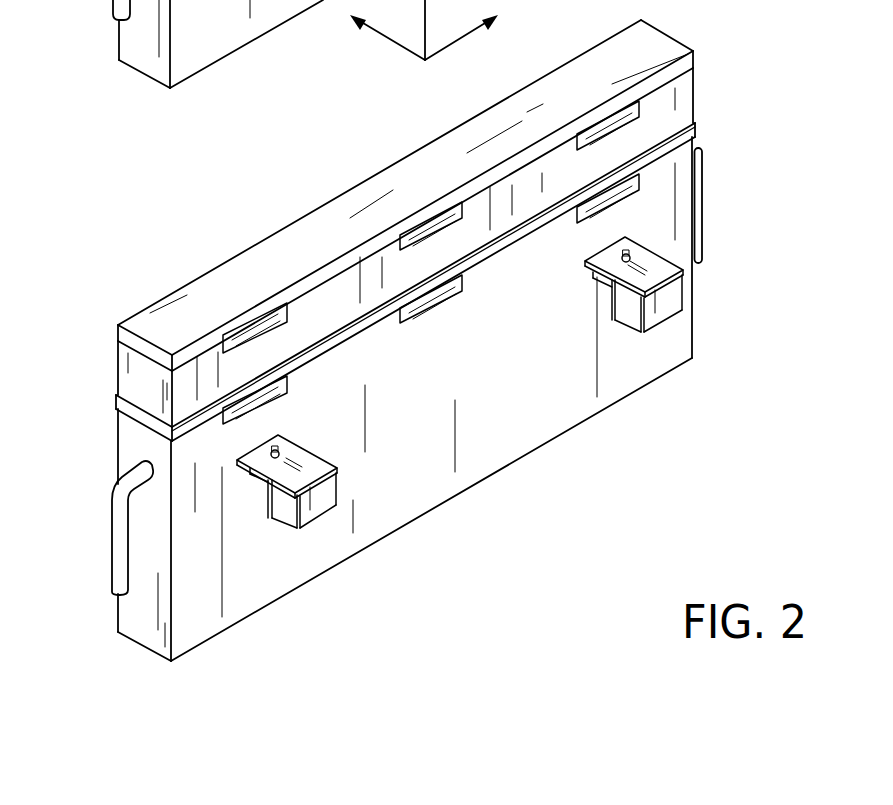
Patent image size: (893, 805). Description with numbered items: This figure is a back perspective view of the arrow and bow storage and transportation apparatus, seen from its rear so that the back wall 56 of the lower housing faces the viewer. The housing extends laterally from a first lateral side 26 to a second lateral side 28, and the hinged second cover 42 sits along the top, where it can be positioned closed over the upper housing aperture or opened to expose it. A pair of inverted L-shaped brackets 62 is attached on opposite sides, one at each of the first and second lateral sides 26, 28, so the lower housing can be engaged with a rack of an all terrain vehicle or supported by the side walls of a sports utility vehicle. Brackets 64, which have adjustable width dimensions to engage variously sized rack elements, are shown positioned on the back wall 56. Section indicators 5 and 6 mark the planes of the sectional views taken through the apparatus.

The section line 5- 5 is at (369, 30).
The section line 6- 6 is at (483, 30).
The first lateral side 26 is at (137, 43).
The second lateral side 28 is at (133, 618).
The second cover 42 is at (657, 48).
The back wall 56 is at (472, 437).
The brackets 62 is at (112, 555).
The brackets 64 is at (328, 502).